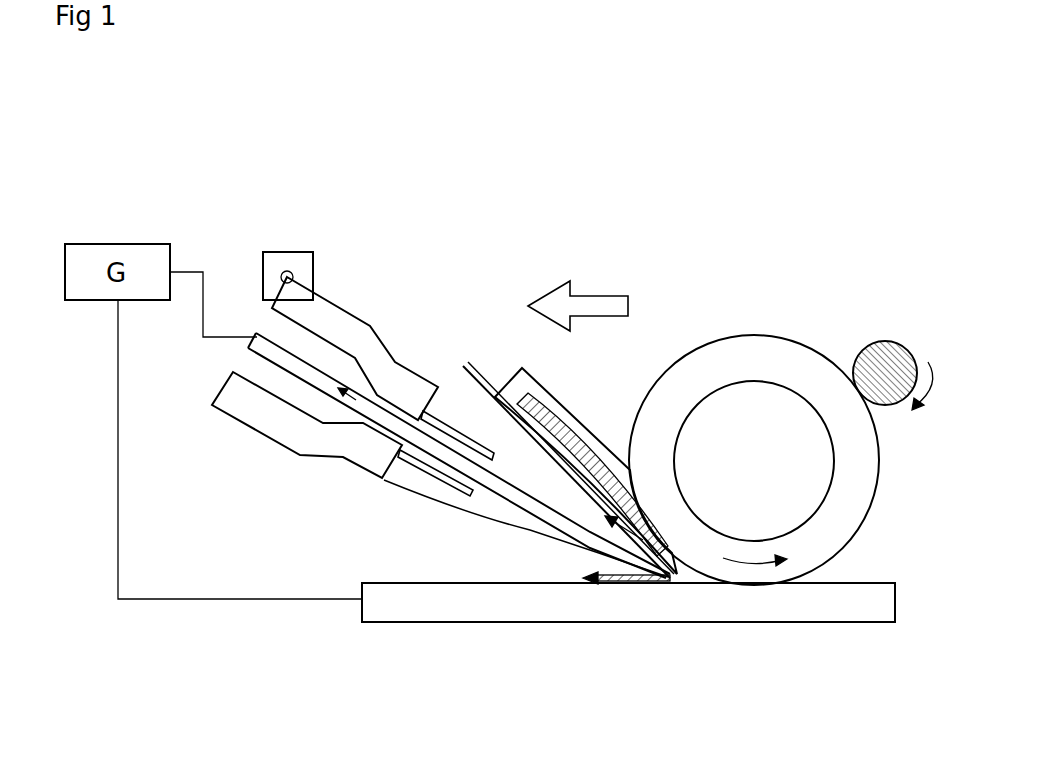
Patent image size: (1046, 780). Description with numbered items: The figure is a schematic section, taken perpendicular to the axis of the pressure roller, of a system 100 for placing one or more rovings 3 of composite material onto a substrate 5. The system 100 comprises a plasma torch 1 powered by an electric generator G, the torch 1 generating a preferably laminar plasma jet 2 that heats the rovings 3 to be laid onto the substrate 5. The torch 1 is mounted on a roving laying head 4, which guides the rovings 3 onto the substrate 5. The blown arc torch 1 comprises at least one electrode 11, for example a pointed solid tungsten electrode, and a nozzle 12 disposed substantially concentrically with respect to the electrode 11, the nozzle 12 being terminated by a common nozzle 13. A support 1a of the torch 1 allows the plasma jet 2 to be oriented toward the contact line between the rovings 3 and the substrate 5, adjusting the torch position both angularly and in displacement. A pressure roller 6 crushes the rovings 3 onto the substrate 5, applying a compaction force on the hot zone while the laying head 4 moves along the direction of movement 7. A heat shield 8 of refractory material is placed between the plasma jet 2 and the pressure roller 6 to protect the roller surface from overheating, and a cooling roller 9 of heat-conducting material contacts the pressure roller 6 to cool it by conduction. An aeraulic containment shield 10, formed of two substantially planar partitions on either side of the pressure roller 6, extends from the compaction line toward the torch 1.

The system 100 is at (424, 140).
The plasma torch 1 is at (266, 451).
The support 1a is at (300, 250).
The electrode 11 is at (256, 333).
The nozzle 12 is at (337, 322).
The common nozzle 13 is at (443, 417).
The plasma jet 2 is at (507, 493).
The aeraulic containment shield 10 is at (517, 532).
The rovings 3 is at (466, 365).
The roving laying head 4 is at (508, 386).
The heat shield 8 is at (563, 436).
The direction of movement 7 is at (592, 296).
The pressure roller 6 is at (758, 357).
The cooling roller 9 is at (887, 347).
The substrate 5 is at (768, 603).